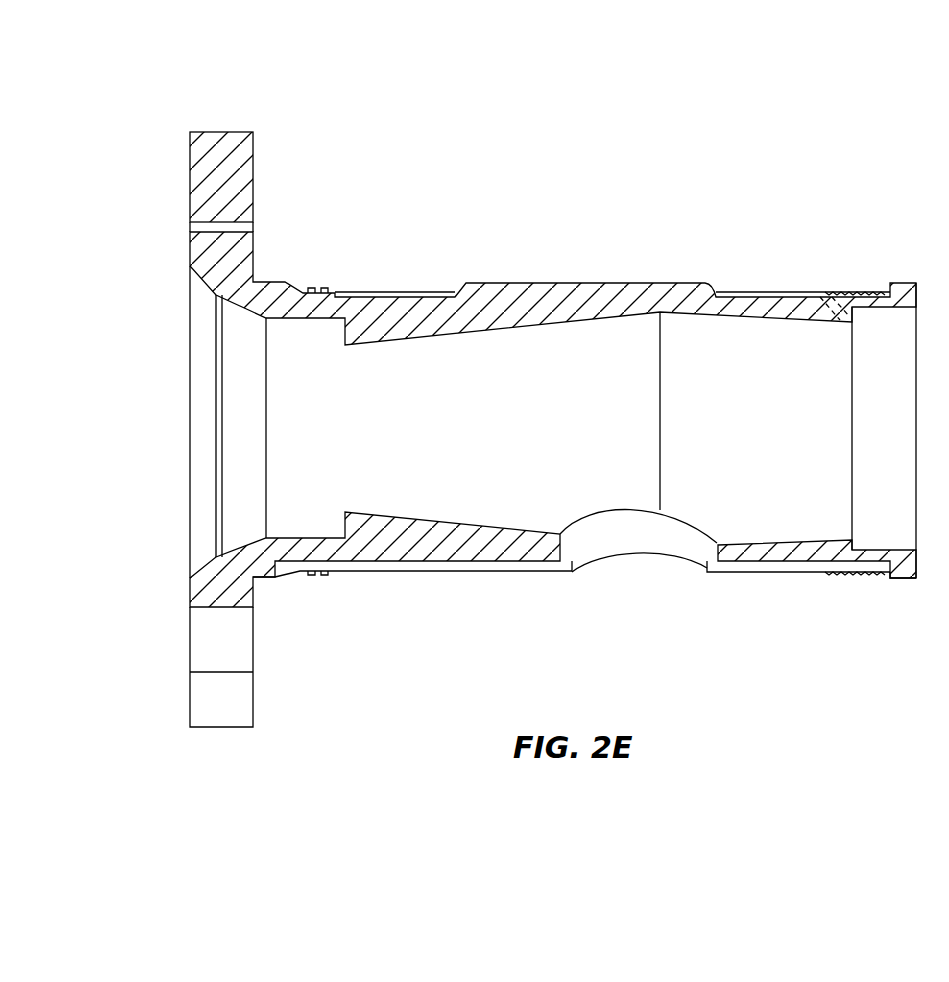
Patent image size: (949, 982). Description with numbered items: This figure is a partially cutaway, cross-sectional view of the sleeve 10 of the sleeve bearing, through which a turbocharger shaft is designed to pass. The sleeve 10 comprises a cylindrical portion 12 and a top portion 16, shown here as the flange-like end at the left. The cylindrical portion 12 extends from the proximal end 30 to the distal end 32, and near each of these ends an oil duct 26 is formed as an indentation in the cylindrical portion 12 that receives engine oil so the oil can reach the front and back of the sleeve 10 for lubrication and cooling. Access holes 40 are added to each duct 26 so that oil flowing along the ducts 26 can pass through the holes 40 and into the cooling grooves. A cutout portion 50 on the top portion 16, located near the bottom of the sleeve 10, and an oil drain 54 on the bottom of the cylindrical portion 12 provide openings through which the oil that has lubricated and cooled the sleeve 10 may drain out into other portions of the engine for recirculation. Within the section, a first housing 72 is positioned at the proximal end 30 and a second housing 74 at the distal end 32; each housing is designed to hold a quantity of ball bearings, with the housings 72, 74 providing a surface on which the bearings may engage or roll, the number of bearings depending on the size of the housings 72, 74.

The sleeve 10 is at (488, 405).
The cylindrical portion 12 is at (585, 282).
The top portion 16 is at (156, 429).
The oil duct 26 is at (431, 297).
The proximal end 30 is at (304, 595).
The distal end 32 is at (858, 600).
The access hole 40 is at (407, 298).
The cutout portion 50 is at (207, 633).
The oil drain 54 is at (627, 549).
The first housing 72 is at (322, 434).
The second housing 74 is at (898, 434).